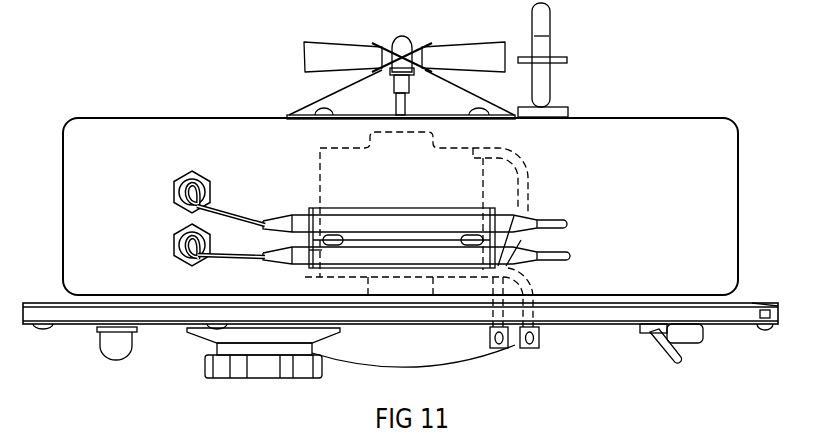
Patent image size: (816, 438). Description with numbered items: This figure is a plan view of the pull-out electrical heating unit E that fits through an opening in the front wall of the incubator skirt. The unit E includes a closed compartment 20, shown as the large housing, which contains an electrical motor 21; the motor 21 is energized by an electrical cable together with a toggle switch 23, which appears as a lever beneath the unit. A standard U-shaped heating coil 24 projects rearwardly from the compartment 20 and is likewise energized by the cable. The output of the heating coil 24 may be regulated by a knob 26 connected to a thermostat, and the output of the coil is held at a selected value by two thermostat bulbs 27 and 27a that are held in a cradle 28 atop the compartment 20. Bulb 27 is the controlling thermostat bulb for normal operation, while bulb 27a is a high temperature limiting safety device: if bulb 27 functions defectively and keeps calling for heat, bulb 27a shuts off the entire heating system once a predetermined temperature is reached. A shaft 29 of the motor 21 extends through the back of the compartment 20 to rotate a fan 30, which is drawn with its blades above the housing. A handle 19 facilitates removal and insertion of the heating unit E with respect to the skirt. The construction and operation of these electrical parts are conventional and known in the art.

The handle 19 is at (468, 352).
The closed compartment 20 is at (717, 150).
The electrical motor 21 is at (318, 163).
The toggle switch 23 is at (672, 363).
The U-shaped heating coil 24 is at (549, 35).
The knob 26 is at (240, 370).
The thermostat bulb 27 is at (383, 222).
The thermostat bulb 27a is at (336, 262).
The cradle 28 is at (515, 248).
The shaft 29 is at (402, 104).
The fan 30 is at (458, 49).
The heating unit E is at (587, 315).